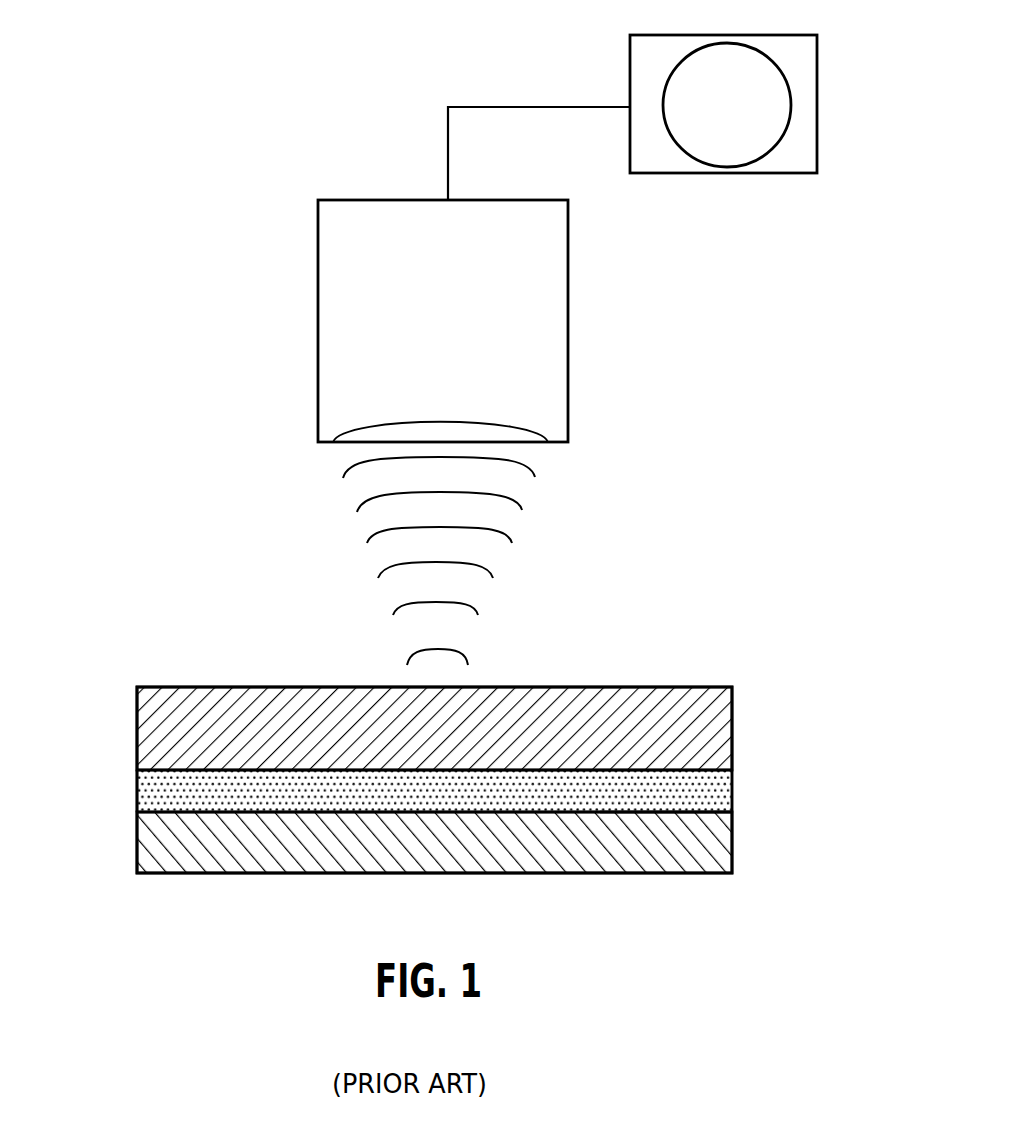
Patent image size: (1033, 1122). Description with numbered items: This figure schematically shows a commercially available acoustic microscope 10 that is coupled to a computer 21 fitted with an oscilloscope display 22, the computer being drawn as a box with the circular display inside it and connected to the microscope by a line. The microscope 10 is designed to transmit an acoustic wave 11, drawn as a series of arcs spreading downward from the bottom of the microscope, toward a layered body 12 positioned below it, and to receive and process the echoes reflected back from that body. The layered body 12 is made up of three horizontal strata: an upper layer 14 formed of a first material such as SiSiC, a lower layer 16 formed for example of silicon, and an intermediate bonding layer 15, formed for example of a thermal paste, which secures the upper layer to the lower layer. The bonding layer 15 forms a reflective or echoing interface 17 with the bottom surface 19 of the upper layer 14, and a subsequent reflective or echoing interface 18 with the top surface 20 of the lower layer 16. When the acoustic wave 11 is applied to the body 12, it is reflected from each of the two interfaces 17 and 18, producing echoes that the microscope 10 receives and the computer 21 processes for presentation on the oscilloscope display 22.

The acoustic microscope 10 is at (429, 339).
The acoustic wave 11 is at (487, 530).
The layered body 12 is at (709, 598).
The upper layer 14 is at (417, 752).
The intermediate bonding layer 15 is at (417, 809).
The lower layer 16 is at (417, 854).
The upper interface 17 is at (748, 757).
The lower interface 18 is at (520, 847).
The bottom surface of the upper layer 19 is at (137, 776).
The top surface of the lower layer 20 is at (725, 803).
The computer 21 is at (630, 64).
The oscilloscope display 22 is at (712, 126).